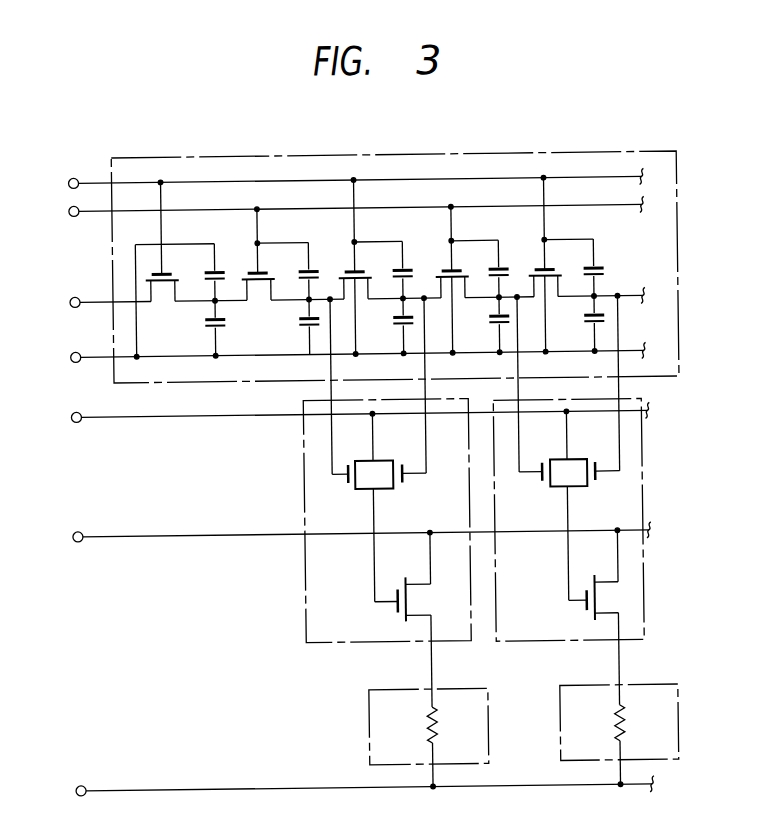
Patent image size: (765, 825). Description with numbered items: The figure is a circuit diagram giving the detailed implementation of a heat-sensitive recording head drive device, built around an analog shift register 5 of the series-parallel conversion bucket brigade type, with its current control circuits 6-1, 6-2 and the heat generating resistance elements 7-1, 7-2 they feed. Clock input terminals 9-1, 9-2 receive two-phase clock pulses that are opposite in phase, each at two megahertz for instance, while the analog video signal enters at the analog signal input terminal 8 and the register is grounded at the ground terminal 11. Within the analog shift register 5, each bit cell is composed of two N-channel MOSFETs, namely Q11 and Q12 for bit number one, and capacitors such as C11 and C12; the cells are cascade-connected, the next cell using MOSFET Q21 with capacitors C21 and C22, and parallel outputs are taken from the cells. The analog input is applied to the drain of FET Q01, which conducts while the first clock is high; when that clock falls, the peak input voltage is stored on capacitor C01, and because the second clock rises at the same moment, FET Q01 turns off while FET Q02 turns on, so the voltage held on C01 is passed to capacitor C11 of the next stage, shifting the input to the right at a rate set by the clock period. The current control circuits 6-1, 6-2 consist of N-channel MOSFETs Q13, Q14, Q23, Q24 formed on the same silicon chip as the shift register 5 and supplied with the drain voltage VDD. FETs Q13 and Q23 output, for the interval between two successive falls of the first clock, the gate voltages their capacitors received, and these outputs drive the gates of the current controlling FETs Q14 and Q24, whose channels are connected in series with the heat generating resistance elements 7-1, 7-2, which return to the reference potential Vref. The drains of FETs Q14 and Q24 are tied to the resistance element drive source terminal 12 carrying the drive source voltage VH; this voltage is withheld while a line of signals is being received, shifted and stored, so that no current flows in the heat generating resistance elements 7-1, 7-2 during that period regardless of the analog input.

The analog shift register 5 is at (587, 158).
The clock input terminal 9-1 is at (336, 180).
The clock input terminal 9-2 is at (337, 208).
The analog signal input terminal 8 is at (350, 299).
The ground terminal 11 is at (349, 354).
The resistance element drive source terminal 12 is at (355, 534).
The current control circuit 6-1 is at (598, 552).
The current control circuit 6-2 is at (360, 554).
The heat generating resistance element 7-1 is at (394, 695).
The heat generating resistance element 7-2 is at (584, 698).
The FET Q01 is at (180, 271).
The FET Q02 is at (274, 272).
The N-channel MOSFET Q11 is at (369, 272).
The N-channel MOSFET Q12 is at (463, 272).
The N-channel MOSFET Q21 is at (557, 272).
The capacitor C01 is at (207, 318).
The capacitor C11 is at (303, 318).
The capacitor C12 is at (395, 319).
The capacitor C21 is at (492, 318).
The capacitor C22 is at (587, 318).
The FET Q13 is at (384, 464).
The current controlling FET Q14 is at (395, 609).
The FET Q23 is at (578, 465).
The current controlling FET Q24 is at (584, 609).
The drain voltage VDD is at (129, 418).
The resistance element drive source voltage VH is at (121, 536).
The reference potential Vref is at (136, 790).